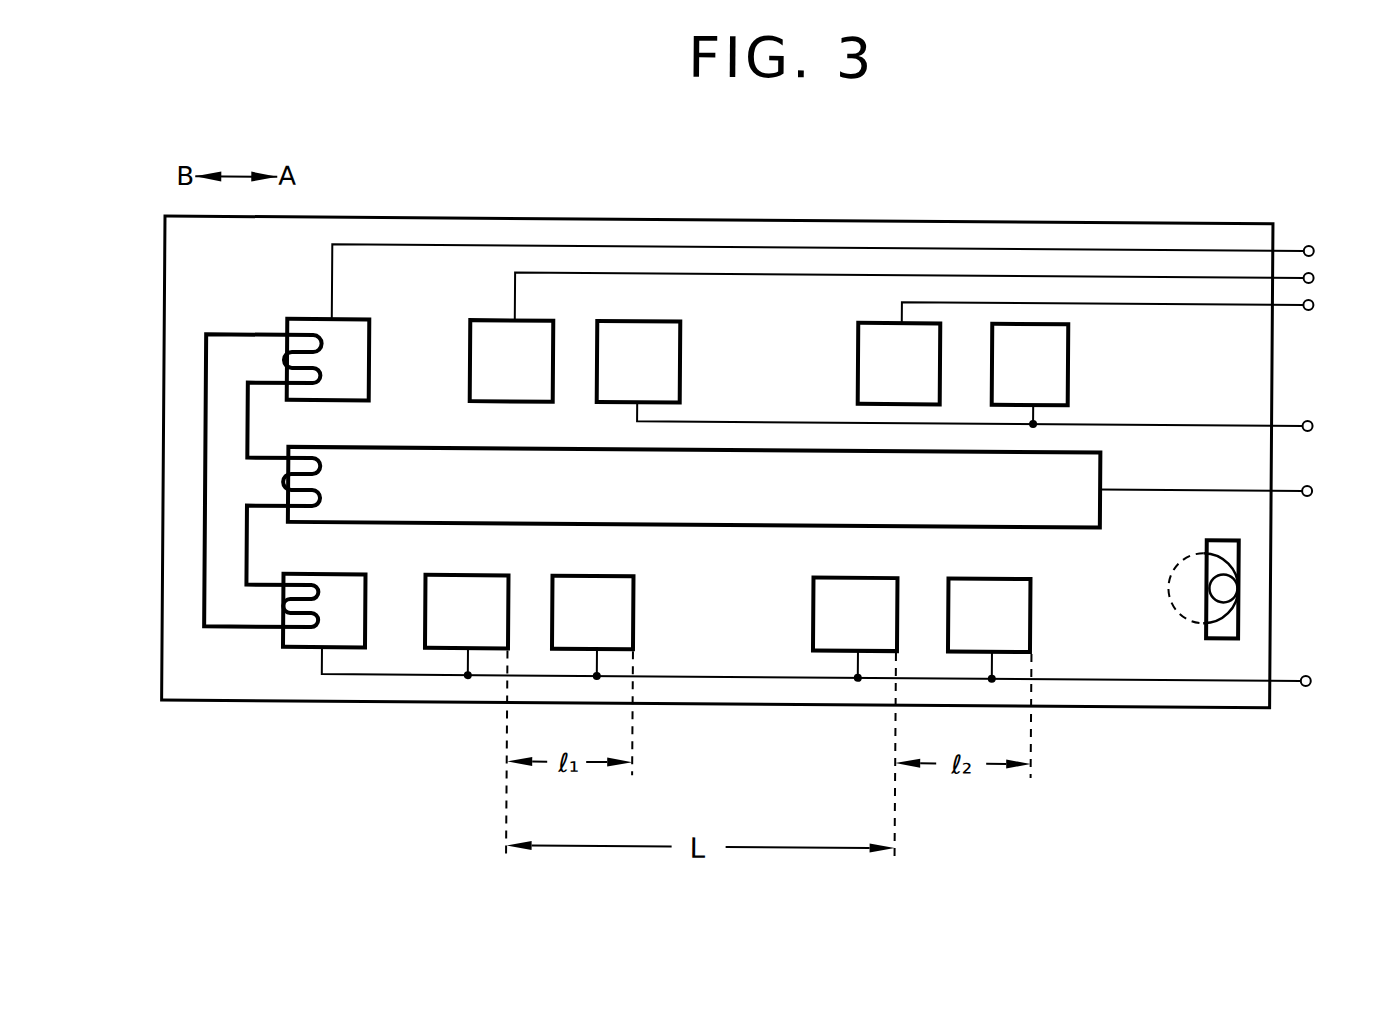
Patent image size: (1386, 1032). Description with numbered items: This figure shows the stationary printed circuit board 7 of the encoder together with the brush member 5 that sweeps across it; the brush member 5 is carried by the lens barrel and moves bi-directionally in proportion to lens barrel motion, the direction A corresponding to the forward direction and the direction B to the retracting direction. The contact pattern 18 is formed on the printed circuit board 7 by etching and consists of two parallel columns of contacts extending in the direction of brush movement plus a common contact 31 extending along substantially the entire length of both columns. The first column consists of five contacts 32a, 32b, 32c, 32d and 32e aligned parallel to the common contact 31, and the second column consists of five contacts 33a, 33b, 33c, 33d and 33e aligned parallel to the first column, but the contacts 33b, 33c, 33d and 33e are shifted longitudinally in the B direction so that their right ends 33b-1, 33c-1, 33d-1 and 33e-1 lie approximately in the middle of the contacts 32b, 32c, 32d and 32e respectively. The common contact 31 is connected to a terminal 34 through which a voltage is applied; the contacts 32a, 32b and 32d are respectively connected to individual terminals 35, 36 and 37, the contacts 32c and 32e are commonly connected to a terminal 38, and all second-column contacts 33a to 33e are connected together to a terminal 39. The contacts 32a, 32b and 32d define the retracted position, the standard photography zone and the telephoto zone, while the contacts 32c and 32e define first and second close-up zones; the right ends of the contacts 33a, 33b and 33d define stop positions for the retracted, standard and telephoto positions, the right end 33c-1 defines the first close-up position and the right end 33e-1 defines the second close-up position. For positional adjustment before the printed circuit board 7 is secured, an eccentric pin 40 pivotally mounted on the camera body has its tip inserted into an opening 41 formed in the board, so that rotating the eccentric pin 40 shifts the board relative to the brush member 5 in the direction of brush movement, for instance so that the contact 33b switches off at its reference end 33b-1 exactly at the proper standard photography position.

The brush member 5 is at (215, 437).
The printed circuit board 7 is at (786, 216).
The contact pattern 18 is at (836, 298).
The common contact 31 is at (450, 452).
The contact 32a is at (370, 368).
The contact 32b is at (474, 340).
The contact 32c is at (668, 349).
The contact 32d is at (868, 365).
The contact 32e is at (1069, 347).
The contact 33a is at (338, 584).
The contact 33b is at (463, 584).
The right end of contact 33b 33b-1 is at (512, 588).
The contact 33c is at (622, 579).
The right end of contact 33c 33c-1 is at (636, 601).
The contact 33d is at (826, 581).
The right end of contact 33d 33d-1 is at (900, 585).
The contact 33e is at (1012, 577).
The right end of contact 33e 33e-1 is at (1033, 598).
The terminal 34 is at (1314, 483).
The terminal 35 is at (1314, 243).
The terminal 36 is at (1314, 270).
The terminal 37 is at (1314, 297).
The terminal 38 is at (1314, 418).
The terminal 39 is at (1314, 672).
The eccentric pin 40 is at (1226, 581).
The opening 41 is at (1241, 615).